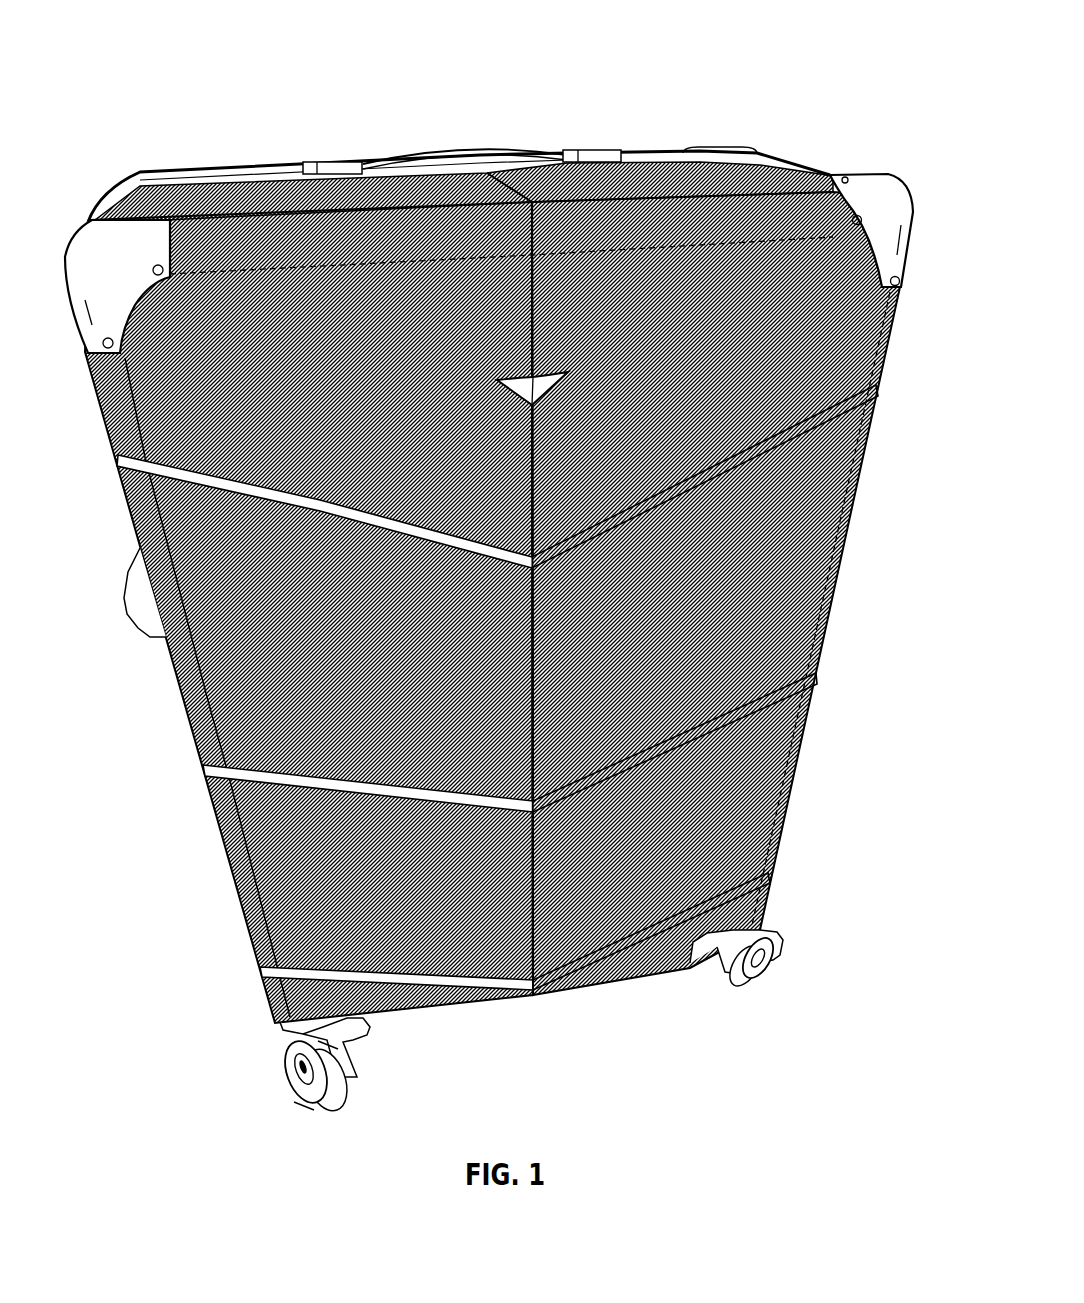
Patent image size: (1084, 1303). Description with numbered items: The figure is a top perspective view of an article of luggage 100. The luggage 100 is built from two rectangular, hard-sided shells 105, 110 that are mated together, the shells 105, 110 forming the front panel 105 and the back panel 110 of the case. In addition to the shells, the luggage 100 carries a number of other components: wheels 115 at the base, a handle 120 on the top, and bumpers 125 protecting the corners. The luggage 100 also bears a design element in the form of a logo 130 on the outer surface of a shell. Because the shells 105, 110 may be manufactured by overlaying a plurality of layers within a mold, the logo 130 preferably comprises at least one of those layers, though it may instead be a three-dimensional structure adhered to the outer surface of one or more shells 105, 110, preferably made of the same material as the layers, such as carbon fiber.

The article of luggage 100 is at (822, 46).
The shell (front panel) 105 is at (873, 367).
The shell (back panel) 110 is at (643, 152).
The wheels 115 is at (330, 1080).
The handle 120 is at (481, 151).
The bumper 125 is at (95, 260).
The logo 130 is at (548, 382).